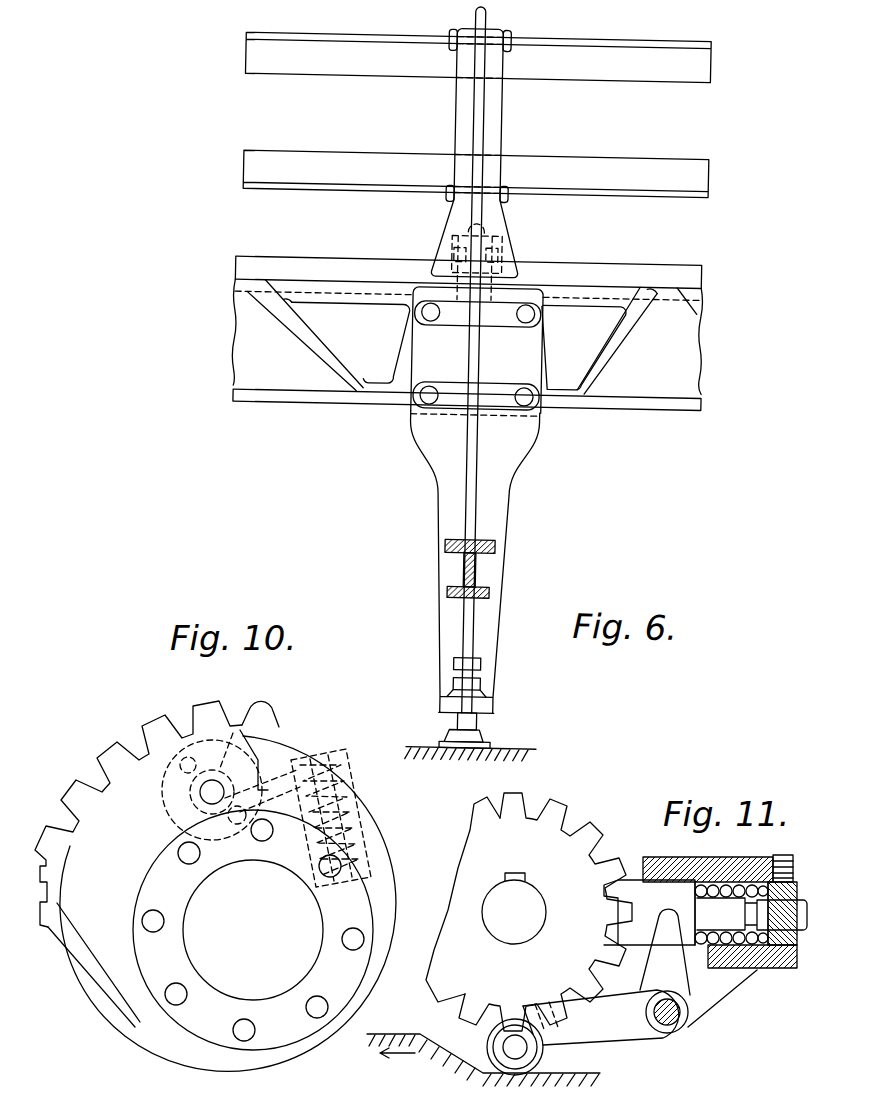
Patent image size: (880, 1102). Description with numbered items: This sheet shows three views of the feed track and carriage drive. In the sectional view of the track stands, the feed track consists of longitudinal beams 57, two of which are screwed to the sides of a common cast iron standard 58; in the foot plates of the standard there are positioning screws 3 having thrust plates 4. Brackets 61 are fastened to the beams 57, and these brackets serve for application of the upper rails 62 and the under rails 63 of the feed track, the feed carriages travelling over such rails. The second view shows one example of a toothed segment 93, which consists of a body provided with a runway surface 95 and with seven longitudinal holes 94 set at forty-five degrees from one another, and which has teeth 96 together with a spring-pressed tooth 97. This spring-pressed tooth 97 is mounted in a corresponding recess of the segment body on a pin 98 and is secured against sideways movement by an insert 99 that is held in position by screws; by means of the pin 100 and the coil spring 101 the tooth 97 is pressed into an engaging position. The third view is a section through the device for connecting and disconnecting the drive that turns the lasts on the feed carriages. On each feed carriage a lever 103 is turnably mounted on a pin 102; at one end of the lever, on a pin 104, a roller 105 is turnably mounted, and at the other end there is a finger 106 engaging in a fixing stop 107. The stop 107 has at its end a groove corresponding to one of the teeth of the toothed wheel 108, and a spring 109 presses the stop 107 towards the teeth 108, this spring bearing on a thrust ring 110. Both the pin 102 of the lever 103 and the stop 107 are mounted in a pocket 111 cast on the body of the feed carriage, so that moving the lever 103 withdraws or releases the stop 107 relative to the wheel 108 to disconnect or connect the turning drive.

In FIG. 6, the positioning screw 3 is at (496, 712).
In FIG. 6, the thrust plate 4 is at (479, 739).
In FIG. 6, the longitudinal beam 57 is at (466, 360).
In FIG. 6, the cast iron standard 58 is at (488, 501).
In FIG. 6, the bracket 61 is at (494, 164).
In FIG. 6, the upper rail 62 is at (478, 73).
In FIG. 6, the under rail 63 is at (476, 158).
In FIG. 10, the toothed segment 93 is at (302, 1047).
In FIG. 10, the longitudinal hole 94 is at (173, 993).
In FIG. 10, the runway surface 95 is at (102, 925).
In FIG. 11, the runway surface 95 is at (483, 1060).
In FIG. 10, the teeth 96 is at (47, 843).
In FIG. 10, the spring-pressed tooth 97 is at (265, 700).
In FIG. 10, the pin 98 is at (220, 786).
In FIG. 10, the insert 99 is at (155, 753).
In FIG. 10, the pin 100 is at (322, 760).
In FIG. 10, the coil spring 101 is at (348, 810).
In FIG. 11, the pin 102 is at (678, 1019).
In FIG. 11, the lever 103 is at (612, 1033).
In FIG. 11, the pin 104 is at (520, 1052).
In FIG. 11, the roller 105 is at (485, 1037).
In FIG. 11, the finger 106 is at (672, 972).
In FIG. 11, the fixing stop 107 is at (628, 890).
In FIG. 11, the toothed wheel 108 is at (605, 872).
In FIG. 11, the spring 109 is at (742, 890).
In FIG. 11, the thrust ring 110 is at (797, 942).
In FIG. 11, the pocket 111 is at (767, 957).